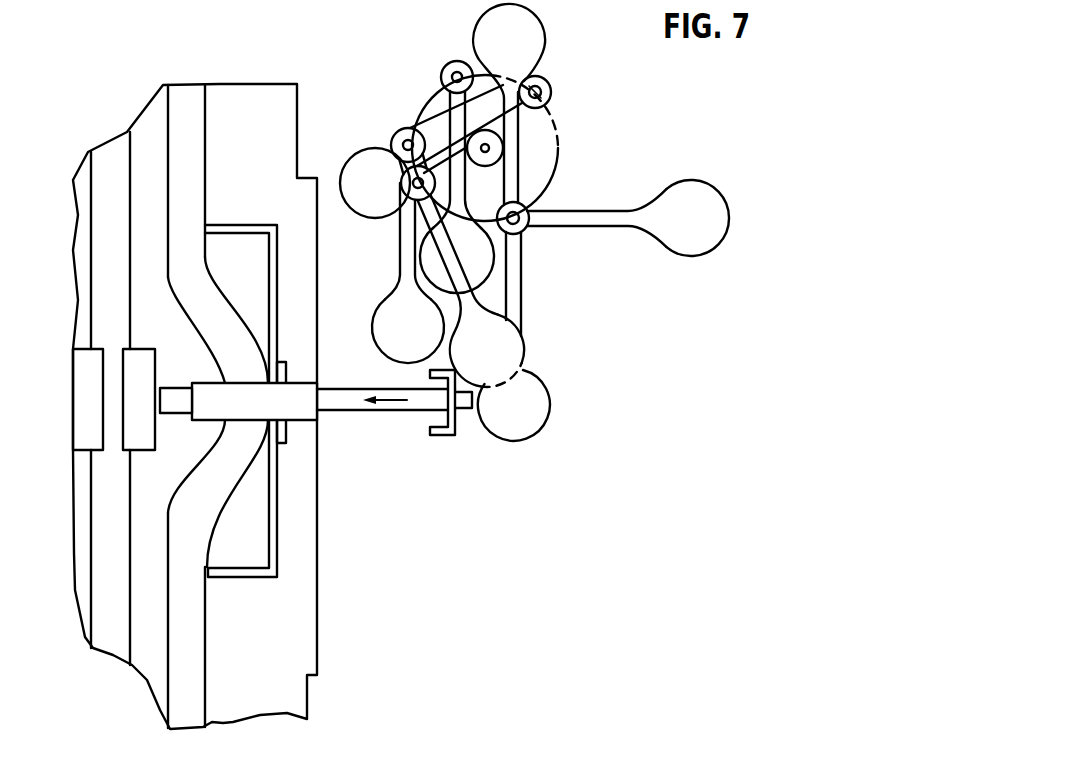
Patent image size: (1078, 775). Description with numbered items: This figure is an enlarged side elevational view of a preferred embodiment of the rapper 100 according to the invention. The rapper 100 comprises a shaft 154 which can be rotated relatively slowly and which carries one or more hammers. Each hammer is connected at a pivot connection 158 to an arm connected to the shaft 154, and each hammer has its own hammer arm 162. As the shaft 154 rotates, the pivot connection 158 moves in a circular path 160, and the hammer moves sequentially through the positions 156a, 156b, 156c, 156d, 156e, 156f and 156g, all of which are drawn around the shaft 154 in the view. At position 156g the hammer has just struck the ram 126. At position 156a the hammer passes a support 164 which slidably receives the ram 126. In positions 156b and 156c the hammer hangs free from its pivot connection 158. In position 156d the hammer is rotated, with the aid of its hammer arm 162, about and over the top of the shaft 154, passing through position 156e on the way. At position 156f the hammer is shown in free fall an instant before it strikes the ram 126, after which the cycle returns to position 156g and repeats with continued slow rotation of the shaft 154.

The rapper 100 is at (670, 156).
The ram 126 is at (415, 409).
The shaft 154 is at (507, 150).
The hammer position 156a is at (487, 343).
The hammer position 156b is at (383, 318).
The hammer position 156c is at (483, 268).
The hammer position 156d is at (349, 176).
The hammer position 156e is at (538, 26).
The hammer position 156f is at (692, 246).
The hammer position 156g is at (533, 413).
The pivot connection 158 is at (446, 69).
The circular path 160 is at (425, 104).
The hammer arm 162 is at (438, 133).
The support 164 is at (454, 436).